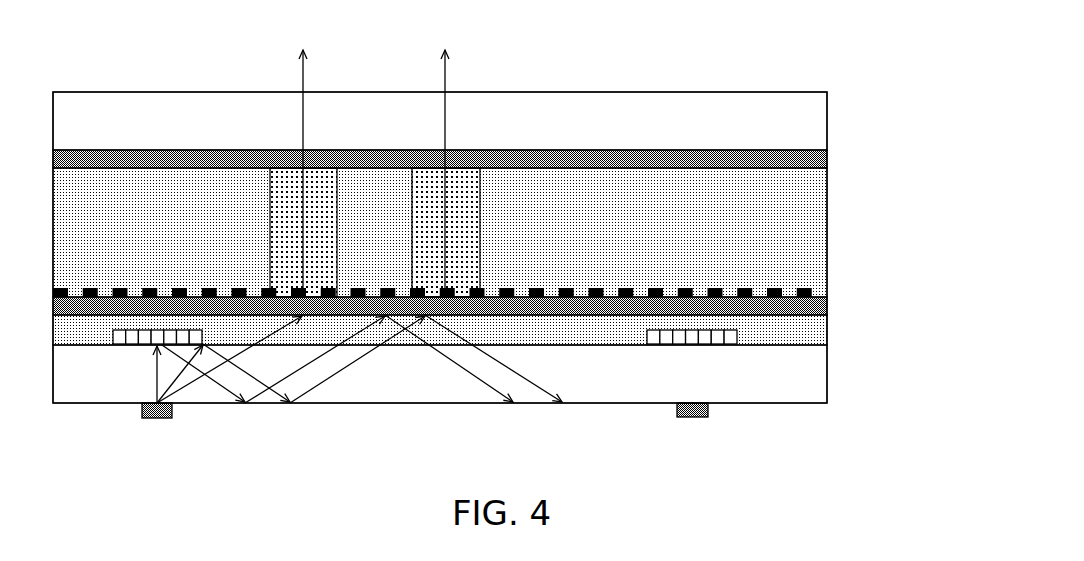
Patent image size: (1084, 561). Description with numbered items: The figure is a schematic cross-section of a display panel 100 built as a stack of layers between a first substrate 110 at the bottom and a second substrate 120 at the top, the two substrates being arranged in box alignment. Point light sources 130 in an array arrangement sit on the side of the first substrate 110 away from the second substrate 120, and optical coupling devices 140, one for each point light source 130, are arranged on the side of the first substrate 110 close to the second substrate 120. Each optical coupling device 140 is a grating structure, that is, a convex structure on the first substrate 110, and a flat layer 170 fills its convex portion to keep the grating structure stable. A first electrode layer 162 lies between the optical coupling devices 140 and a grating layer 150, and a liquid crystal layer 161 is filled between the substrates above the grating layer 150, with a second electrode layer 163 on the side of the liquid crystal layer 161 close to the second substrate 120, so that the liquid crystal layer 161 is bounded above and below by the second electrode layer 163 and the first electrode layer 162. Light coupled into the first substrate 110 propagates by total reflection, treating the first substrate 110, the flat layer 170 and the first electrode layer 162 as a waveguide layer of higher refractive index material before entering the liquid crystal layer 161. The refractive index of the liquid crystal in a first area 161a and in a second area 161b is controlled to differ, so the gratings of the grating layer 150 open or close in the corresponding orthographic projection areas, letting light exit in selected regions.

The display panel 100 is at (803, 413).
The first substrate 110 is at (785, 385).
The second substrate 120 is at (785, 122).
The point light sources 130 is at (262, 462).
The optical coupling devices 140 is at (685, 344).
The grating layer 150 is at (785, 293).
The liquid crystal layer 161 is at (500, 159).
The first area 161a is at (453, 192).
The second area 161b is at (592, 192).
The first electrode layer 162 is at (785, 305).
The second electrode layer 163 is at (785, 167).
The flat layer 170 is at (787, 340).